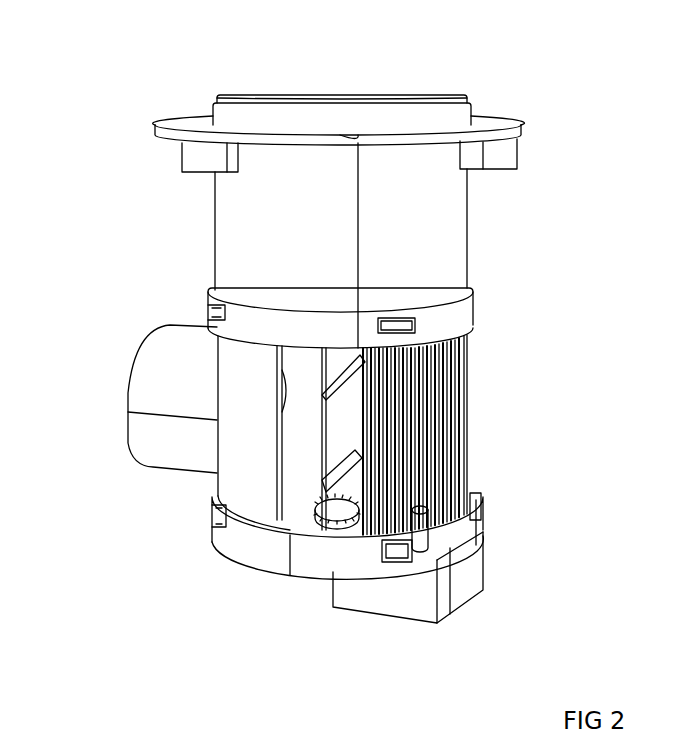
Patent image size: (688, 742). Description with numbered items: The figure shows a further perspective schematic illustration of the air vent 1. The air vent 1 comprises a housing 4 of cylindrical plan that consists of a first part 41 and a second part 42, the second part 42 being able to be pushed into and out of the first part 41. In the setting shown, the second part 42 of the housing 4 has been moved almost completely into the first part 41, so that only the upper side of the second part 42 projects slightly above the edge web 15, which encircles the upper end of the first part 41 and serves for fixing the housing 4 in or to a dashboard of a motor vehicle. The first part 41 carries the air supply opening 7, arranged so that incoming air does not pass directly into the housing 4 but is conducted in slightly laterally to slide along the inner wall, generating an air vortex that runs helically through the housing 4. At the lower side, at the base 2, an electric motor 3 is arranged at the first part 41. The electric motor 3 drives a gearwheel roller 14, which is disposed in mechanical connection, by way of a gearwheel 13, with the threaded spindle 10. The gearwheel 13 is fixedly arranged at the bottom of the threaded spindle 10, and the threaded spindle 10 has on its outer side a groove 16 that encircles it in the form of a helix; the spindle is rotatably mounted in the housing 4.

The air vent 1 is at (186, 237).
The base 2 is at (260, 567).
The electric motor 3 is at (460, 577).
The housing 4 is at (486, 231).
The air supply opening 7 is at (112, 382).
The threaded spindle 10 is at (335, 438).
The gearwheel 13 is at (333, 520).
The gearwheel roller 14 is at (443, 422).
The edge web 15 is at (525, 128).
The groove 16 is at (333, 483).
The first part 41 is at (473, 305).
The second part 42 is at (363, 97).